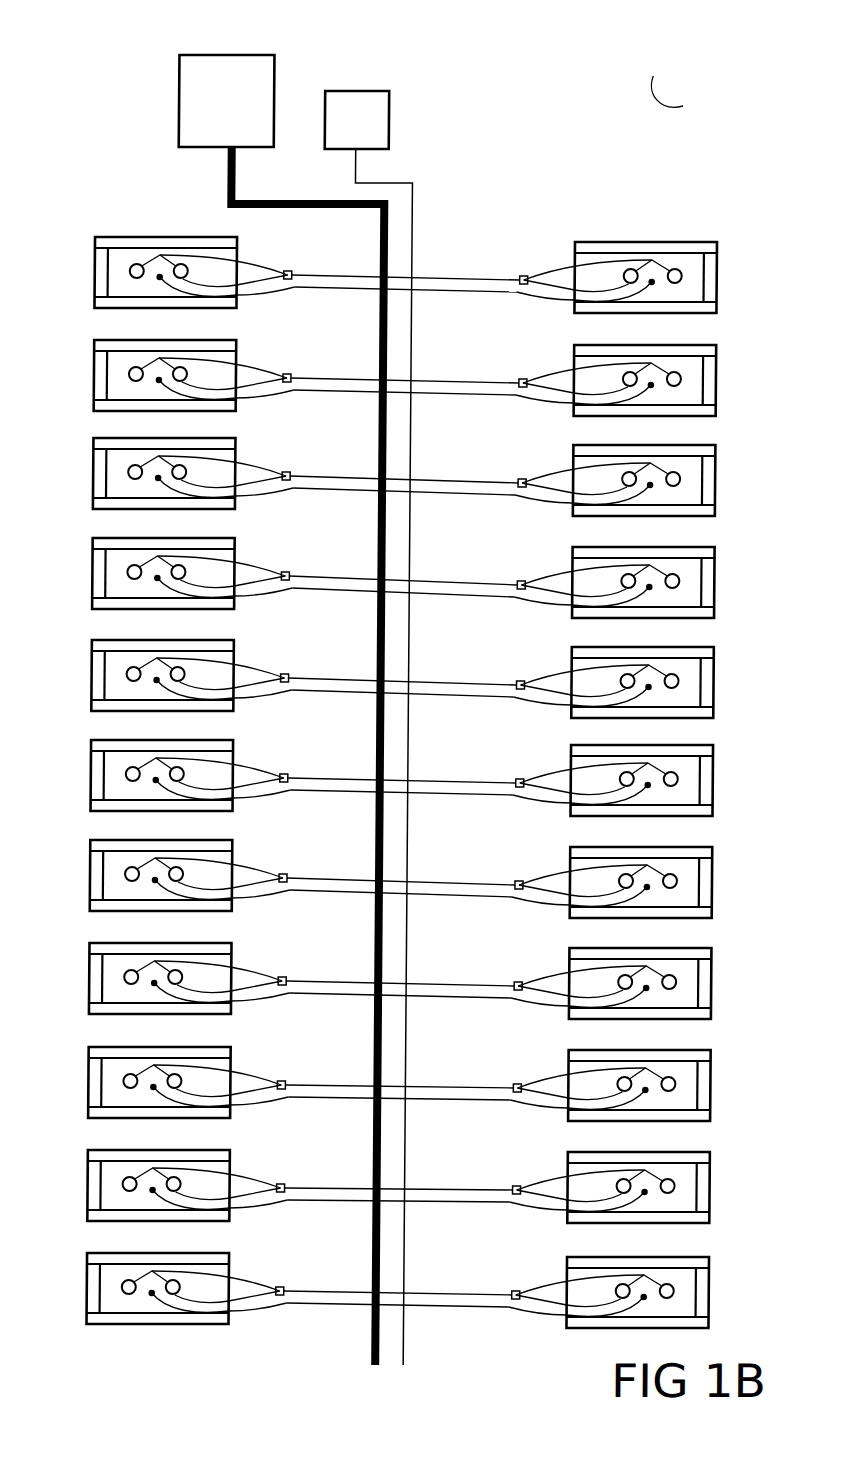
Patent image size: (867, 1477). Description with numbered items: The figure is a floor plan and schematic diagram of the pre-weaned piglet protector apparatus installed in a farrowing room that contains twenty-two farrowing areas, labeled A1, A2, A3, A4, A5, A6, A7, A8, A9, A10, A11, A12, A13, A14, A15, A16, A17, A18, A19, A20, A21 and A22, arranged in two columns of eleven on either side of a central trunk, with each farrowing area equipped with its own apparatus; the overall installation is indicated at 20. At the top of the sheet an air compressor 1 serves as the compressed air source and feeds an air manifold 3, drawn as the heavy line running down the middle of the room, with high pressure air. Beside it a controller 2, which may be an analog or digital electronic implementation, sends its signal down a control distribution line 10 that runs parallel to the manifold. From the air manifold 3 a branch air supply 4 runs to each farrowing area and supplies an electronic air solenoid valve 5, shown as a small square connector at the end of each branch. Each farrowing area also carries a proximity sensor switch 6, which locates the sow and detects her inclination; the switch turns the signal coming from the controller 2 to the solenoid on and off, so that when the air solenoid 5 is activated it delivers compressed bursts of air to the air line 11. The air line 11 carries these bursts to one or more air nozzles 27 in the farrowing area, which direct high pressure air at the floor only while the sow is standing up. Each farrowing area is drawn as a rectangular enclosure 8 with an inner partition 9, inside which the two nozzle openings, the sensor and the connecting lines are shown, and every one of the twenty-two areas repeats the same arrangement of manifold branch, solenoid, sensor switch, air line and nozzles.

The air compressor 1 is at (223, 80).
The controller 2 is at (365, 113).
The air manifold 3 is at (227, 190).
The branch air supply 4 is at (363, 273).
The air solenoid 5 is at (515, 275).
The proximity sensor switch 6 is at (655, 270).
The unit housing 8 is at (138, 242).
The unit inner frame 9 is at (127, 283).
The control distribution line 10 is at (413, 222).
The air line 11 is at (558, 266).
The system 20 is at (665, 92).
The air nozzle 27 is at (684, 276).
The farrowing area A1 is at (174, 275).
The farrowing area A2 is at (197, 413).
The farrowing area A3 is at (197, 511).
The farrowing area A4 is at (197, 611).
The farrowing area A5 is at (197, 713).
The farrowing area A6 is at (197, 813).
The farrowing area A7 is at (197, 913).
The farrowing area A8 is at (197, 1016).
The farrowing area A9 is at (197, 1120).
The farrowing area A10 is at (197, 1223).
The farrowing area A11 is at (197, 1326).
The farrowing area A12 is at (588, 1333).
The farrowing area A13 is at (588, 1228).
The farrowing area A14 is at (588, 1126).
The farrowing area A15 is at (588, 1024).
The farrowing area A16 is at (588, 923).
The farrowing area A17 is at (588, 821).
The farrowing area A18 is at (588, 723).
The farrowing area A19 is at (588, 623).
The farrowing area A20 is at (588, 521).
The farrowing area A21 is at (588, 421).
The farrowing area A22 is at (617, 247).